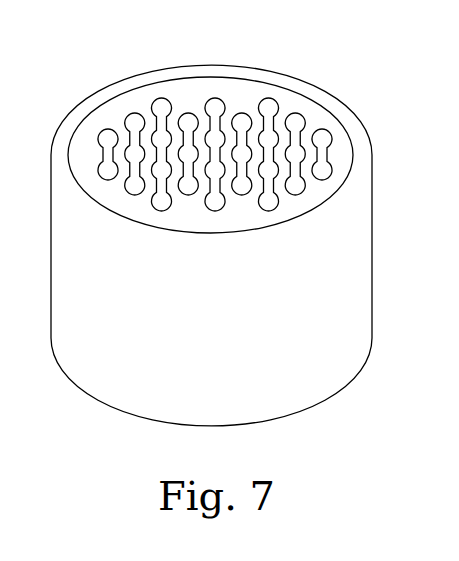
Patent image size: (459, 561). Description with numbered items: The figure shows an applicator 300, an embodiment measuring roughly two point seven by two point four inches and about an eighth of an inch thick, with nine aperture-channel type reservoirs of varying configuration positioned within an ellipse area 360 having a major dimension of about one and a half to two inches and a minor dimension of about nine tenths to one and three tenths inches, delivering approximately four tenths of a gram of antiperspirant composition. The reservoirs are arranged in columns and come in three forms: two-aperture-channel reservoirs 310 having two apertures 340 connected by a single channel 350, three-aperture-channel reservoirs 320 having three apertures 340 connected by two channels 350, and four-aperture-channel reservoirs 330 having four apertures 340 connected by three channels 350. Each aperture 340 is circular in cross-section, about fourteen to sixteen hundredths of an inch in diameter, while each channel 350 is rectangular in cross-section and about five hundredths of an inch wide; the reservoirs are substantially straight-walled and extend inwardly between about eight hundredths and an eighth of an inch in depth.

The applicator 300 is at (311, 372).
The 2-aperture-channel reservoir 310 is at (317, 130).
The 3-aperture-channel reservoir 320 is at (294, 197).
The 4-aperture-channel reservoir 330 is at (268, 212).
The aperture 340 is at (215, 108).
The channel 350 is at (133, 173).
The ellipse area 360 is at (145, 83).